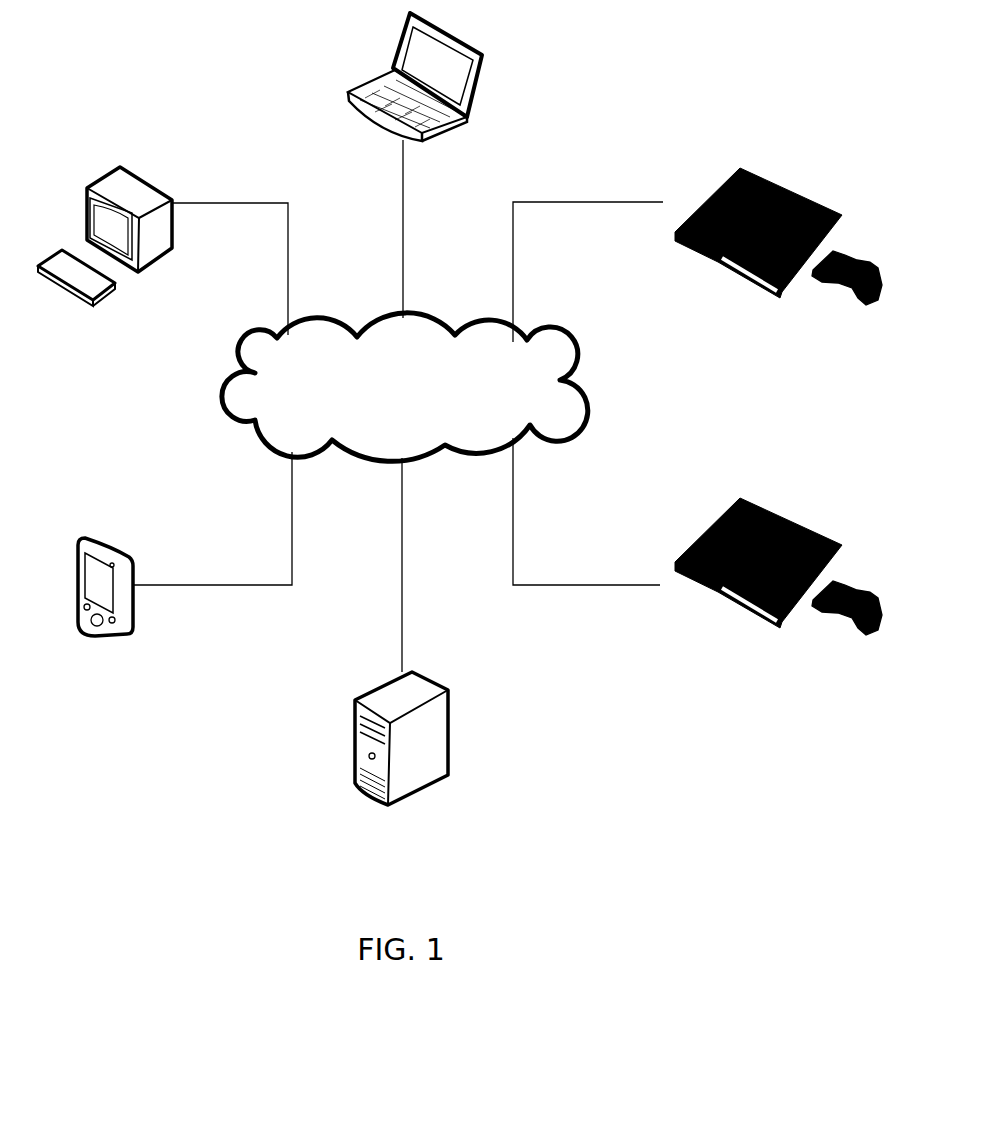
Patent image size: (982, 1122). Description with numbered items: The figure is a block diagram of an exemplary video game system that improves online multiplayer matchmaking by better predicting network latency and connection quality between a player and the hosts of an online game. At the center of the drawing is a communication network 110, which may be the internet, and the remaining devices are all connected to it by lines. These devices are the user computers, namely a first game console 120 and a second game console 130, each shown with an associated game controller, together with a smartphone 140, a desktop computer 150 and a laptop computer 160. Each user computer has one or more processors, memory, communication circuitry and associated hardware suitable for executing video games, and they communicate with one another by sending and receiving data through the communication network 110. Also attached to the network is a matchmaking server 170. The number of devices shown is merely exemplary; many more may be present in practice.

The communication network 110 is at (224, 385).
The first game console 120 is at (777, 623).
The second game console 130 is at (780, 293).
The smartphone 140 is at (108, 636).
The desktop computer 150 is at (95, 302).
The laptop computer 160 is at (452, 127).
The matchmaking server 170 is at (412, 797).